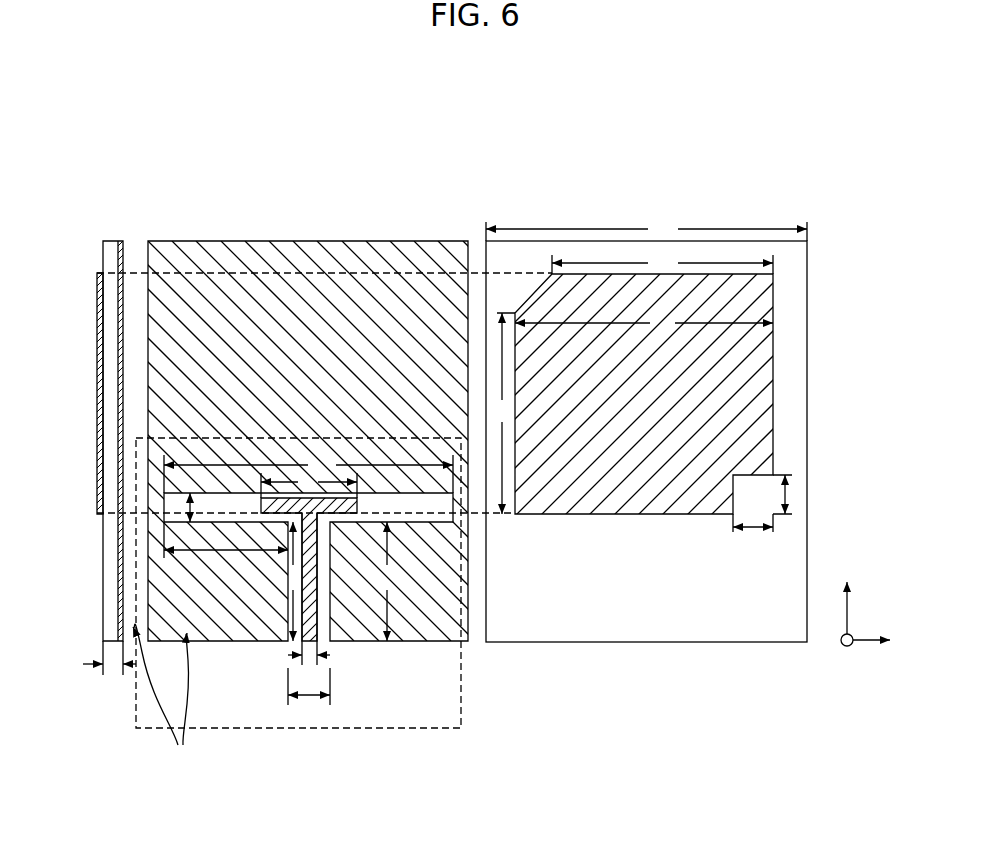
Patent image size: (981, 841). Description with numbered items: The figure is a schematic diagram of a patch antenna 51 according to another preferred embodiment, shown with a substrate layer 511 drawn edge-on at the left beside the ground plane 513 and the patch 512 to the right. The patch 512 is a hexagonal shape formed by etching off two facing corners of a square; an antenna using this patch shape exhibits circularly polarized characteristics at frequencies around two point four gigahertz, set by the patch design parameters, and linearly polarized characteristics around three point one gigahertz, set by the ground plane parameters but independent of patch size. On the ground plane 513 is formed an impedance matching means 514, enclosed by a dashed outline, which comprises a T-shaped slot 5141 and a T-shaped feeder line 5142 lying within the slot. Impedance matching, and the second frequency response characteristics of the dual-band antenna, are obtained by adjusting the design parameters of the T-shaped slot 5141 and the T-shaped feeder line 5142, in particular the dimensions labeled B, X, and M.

The patch antenna 51 is at (425, 103).
The substrate 511 is at (108, 603).
The patch 512 is at (773, 378).
The ground plane 513 is at (307, 241).
The impedance matching means 514 is at (297, 729).
The T-shaped slot 5141 is at (245, 501).
The T-shaped feeder line 5142 is at (323, 624).